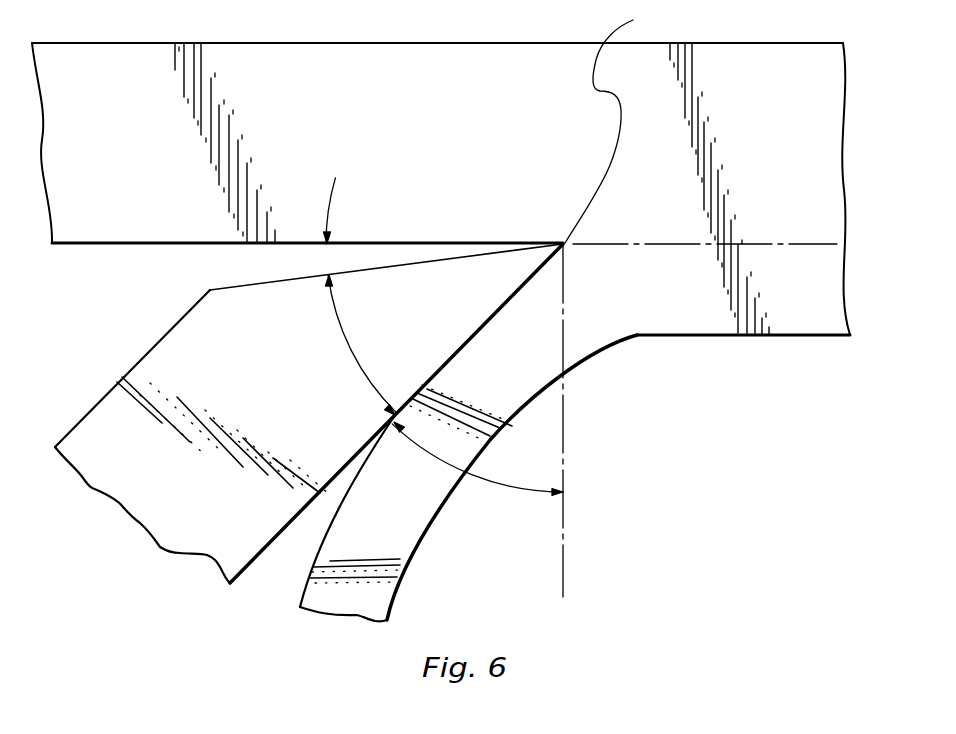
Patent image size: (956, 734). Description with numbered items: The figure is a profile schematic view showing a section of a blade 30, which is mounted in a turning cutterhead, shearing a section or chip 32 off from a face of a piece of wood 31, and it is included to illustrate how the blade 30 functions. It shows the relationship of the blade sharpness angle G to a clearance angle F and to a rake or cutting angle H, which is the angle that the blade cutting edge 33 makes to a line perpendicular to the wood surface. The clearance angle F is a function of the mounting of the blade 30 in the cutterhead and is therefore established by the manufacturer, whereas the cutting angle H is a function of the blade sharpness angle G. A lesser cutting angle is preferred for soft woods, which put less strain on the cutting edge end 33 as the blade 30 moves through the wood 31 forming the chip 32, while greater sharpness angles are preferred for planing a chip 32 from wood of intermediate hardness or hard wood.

The blade 30 is at (267, 409).
The wood 31 is at (499, 152).
The chip 32 is at (489, 398).
The blade cutting edge 33 is at (610, 123).
The clearance angle F is at (327, 262).
The blade sharpness angle G is at (357, 360).
The rake or cutting angle H is at (480, 477).